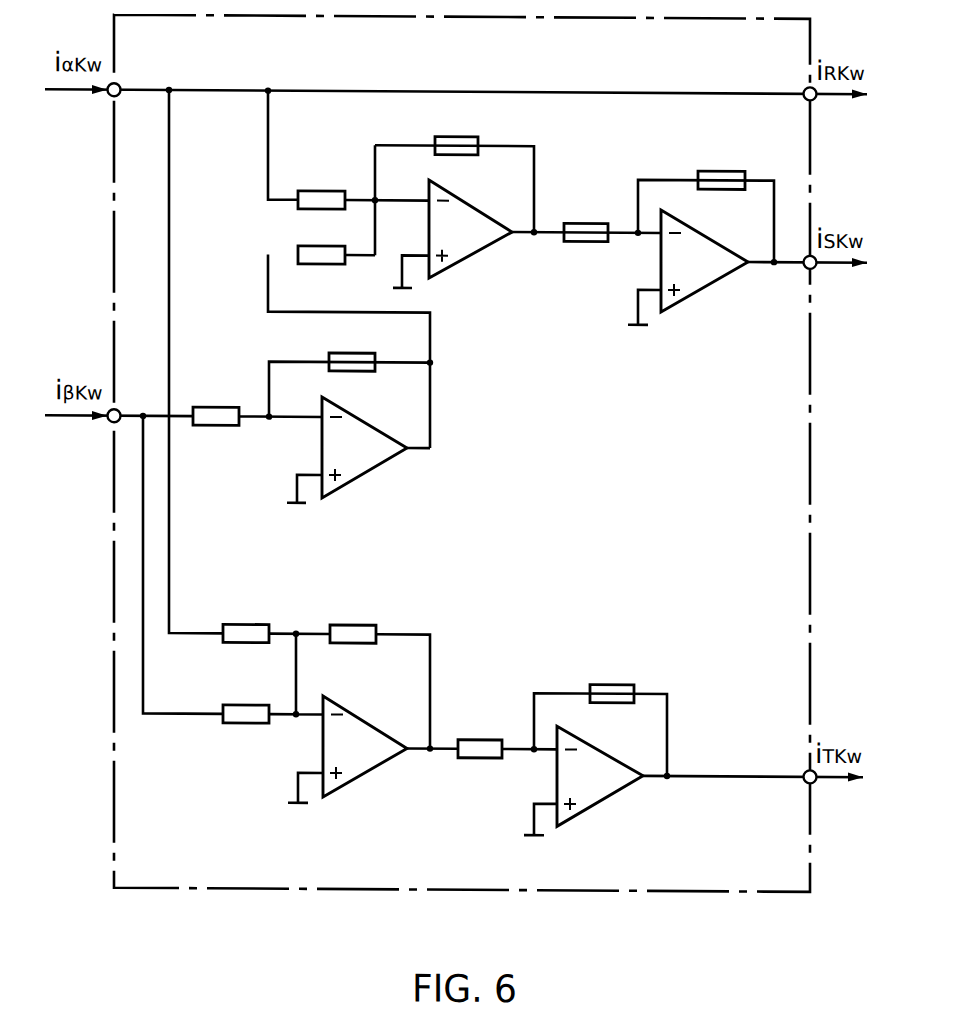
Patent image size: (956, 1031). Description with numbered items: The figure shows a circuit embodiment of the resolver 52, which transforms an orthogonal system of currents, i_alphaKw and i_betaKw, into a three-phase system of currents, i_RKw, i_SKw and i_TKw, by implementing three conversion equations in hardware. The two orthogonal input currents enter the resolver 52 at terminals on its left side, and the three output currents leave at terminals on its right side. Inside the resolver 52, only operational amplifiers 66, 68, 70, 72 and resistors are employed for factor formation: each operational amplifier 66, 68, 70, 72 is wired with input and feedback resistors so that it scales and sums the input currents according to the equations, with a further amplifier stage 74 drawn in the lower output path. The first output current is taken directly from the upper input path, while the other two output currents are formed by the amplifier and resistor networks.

The resolver 52 is at (595, 887).
The operational amplifier 66 is at (477, 250).
The operational amplifier 68 is at (365, 473).
The operational amplifier 70 is at (365, 771).
The operational amplifier 72 is at (700, 286).
The operational amplifier 74 is at (612, 797).